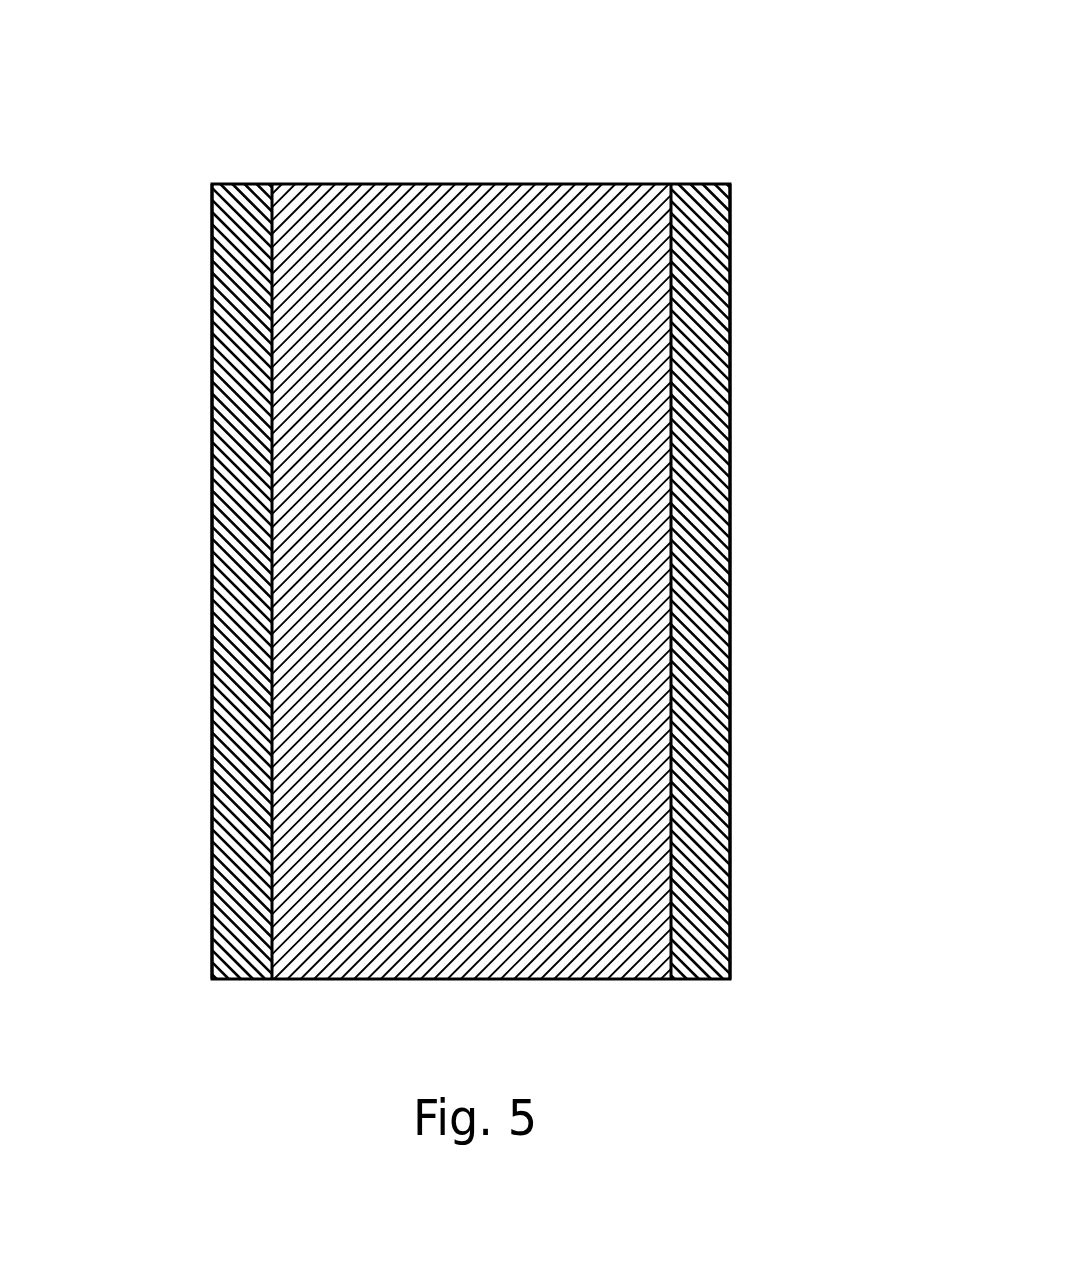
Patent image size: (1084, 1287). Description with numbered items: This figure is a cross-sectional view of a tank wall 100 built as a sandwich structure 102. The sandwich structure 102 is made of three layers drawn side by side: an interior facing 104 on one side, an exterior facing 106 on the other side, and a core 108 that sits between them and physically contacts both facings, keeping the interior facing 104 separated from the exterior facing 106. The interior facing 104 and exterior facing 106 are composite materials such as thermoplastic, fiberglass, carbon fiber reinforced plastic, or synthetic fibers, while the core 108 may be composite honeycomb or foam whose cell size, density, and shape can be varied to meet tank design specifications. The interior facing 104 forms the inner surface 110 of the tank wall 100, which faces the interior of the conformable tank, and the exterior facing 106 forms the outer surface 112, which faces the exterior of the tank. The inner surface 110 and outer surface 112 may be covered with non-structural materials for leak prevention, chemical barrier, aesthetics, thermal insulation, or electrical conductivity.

The tank wall 100 is at (852, 148).
The sandwich structure 102 is at (210, 88).
The interior facing 104 is at (238, 944).
The exterior facing 106 is at (692, 944).
The core 108 is at (480, 257).
The inner surface 110 is at (211, 563).
The outer surface 112 is at (731, 555).